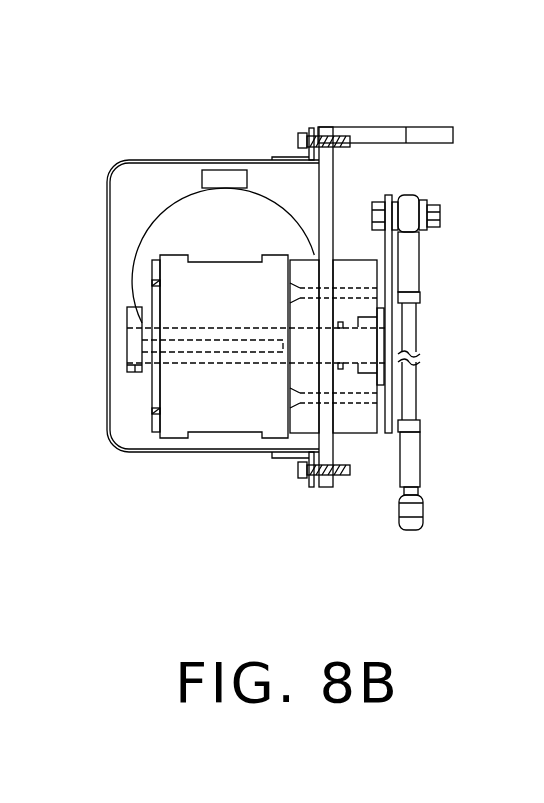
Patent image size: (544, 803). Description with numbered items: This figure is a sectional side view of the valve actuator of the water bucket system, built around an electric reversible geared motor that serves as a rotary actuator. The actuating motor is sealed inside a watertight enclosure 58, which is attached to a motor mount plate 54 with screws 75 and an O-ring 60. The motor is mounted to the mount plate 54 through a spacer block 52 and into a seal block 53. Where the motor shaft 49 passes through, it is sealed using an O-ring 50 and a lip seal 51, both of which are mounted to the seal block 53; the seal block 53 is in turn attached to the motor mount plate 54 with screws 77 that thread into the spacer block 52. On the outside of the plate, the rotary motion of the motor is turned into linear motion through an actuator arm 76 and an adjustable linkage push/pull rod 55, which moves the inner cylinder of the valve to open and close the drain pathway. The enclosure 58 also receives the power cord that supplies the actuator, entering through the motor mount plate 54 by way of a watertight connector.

The motor shaft 49 is at (218, 365).
The O-ring 50 is at (373, 377).
The lip seal 51 is at (345, 372).
The spacer block 52 is at (312, 421).
The seal block 53 is at (362, 269).
The motor mount plate 54 is at (387, 124).
The push/pull rod 55 is at (418, 327).
The watertight enclosure 58 is at (137, 160).
The O-ring 60 is at (318, 452).
The screws 75 is at (297, 130).
The actuator arm 76 is at (392, 274).
The screws 77 is at (357, 407).